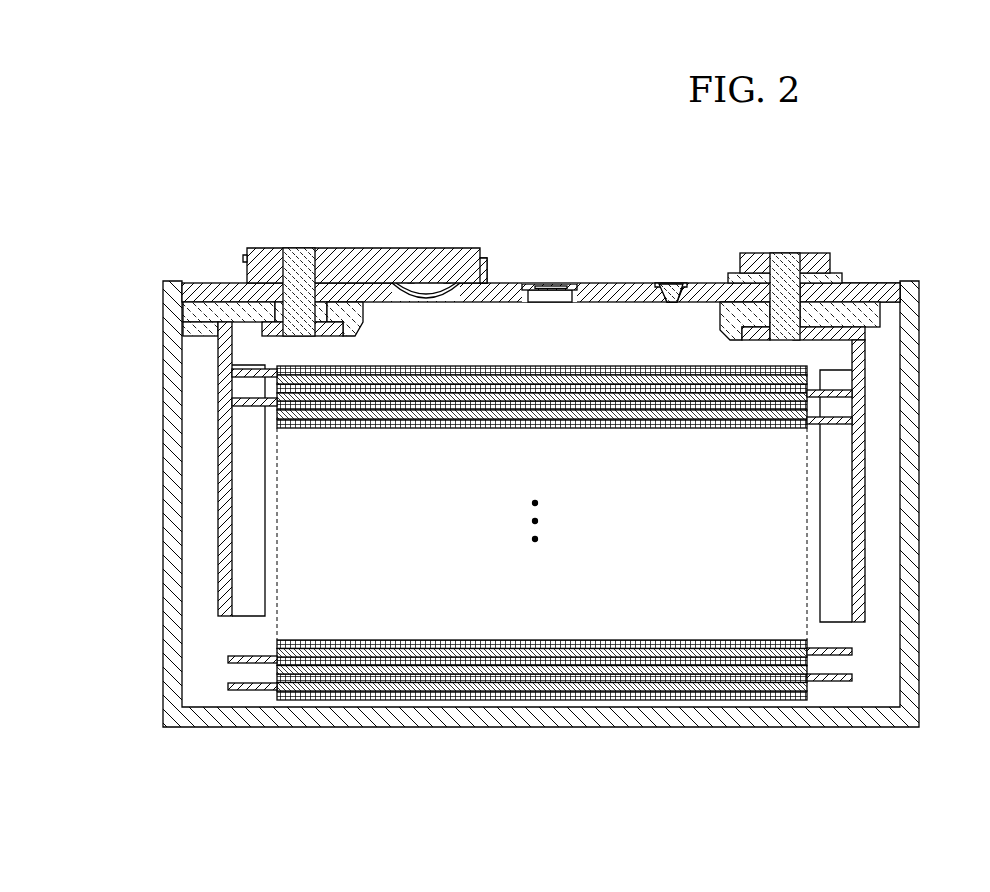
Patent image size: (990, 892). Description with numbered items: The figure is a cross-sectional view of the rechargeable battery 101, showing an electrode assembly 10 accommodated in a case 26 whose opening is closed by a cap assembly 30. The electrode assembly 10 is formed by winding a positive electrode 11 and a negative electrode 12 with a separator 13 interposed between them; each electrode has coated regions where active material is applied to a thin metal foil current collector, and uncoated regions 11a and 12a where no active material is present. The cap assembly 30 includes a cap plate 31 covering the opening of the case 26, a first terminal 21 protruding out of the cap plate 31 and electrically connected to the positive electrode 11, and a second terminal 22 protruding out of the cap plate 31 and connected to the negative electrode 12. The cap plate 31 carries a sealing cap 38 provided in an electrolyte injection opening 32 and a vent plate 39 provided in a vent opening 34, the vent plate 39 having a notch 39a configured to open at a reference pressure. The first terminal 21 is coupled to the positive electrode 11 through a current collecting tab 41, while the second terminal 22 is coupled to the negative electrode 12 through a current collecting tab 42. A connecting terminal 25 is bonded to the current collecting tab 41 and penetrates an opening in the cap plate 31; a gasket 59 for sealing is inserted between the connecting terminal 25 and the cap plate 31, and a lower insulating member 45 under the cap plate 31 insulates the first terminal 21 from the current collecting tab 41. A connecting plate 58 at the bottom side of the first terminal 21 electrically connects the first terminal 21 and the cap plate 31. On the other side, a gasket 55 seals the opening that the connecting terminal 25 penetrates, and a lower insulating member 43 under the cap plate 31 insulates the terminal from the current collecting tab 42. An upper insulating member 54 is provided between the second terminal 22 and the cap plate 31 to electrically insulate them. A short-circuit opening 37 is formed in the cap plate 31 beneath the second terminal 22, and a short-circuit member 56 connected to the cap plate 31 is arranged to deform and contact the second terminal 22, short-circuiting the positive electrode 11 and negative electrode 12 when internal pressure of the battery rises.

The rechargeable battery 101 is at (566, 145).
The electrode assembly 10 is at (541, 572).
The positive electrode 11 is at (715, 674).
The uncoated region 11a is at (832, 681).
The negative electrode 12 is at (357, 685).
The uncoated region 12a is at (240, 691).
The separator 13 is at (545, 667).
The first terminal 21 is at (813, 253).
The second terminal 22 is at (270, 250).
The connecting terminal 25 is at (300, 250).
The case 26 is at (920, 537).
The cap assembly 30 is at (510, 281).
The cap plate 31 is at (887, 295).
The electrolyte injection opening 32 is at (670, 303).
The vent opening 34 is at (548, 303).
The short-circuit opening 37 is at (402, 284).
The sealing cap 38 is at (670, 285).
The vent plate 39 is at (570, 285).
The notch 39a is at (547, 285).
The current collecting tab 41 is at (865, 380).
The current collecting tab 42 is at (218, 383).
The lower insulating member 43 is at (200, 318).
The lower insulating member 45 is at (880, 322).
The upper insulating member 54 is at (490, 256).
The gasket 55 is at (262, 290).
The short-circuit member 56 is at (432, 290).
The connecting plate 58 is at (840, 276).
The gasket 59 is at (740, 302).